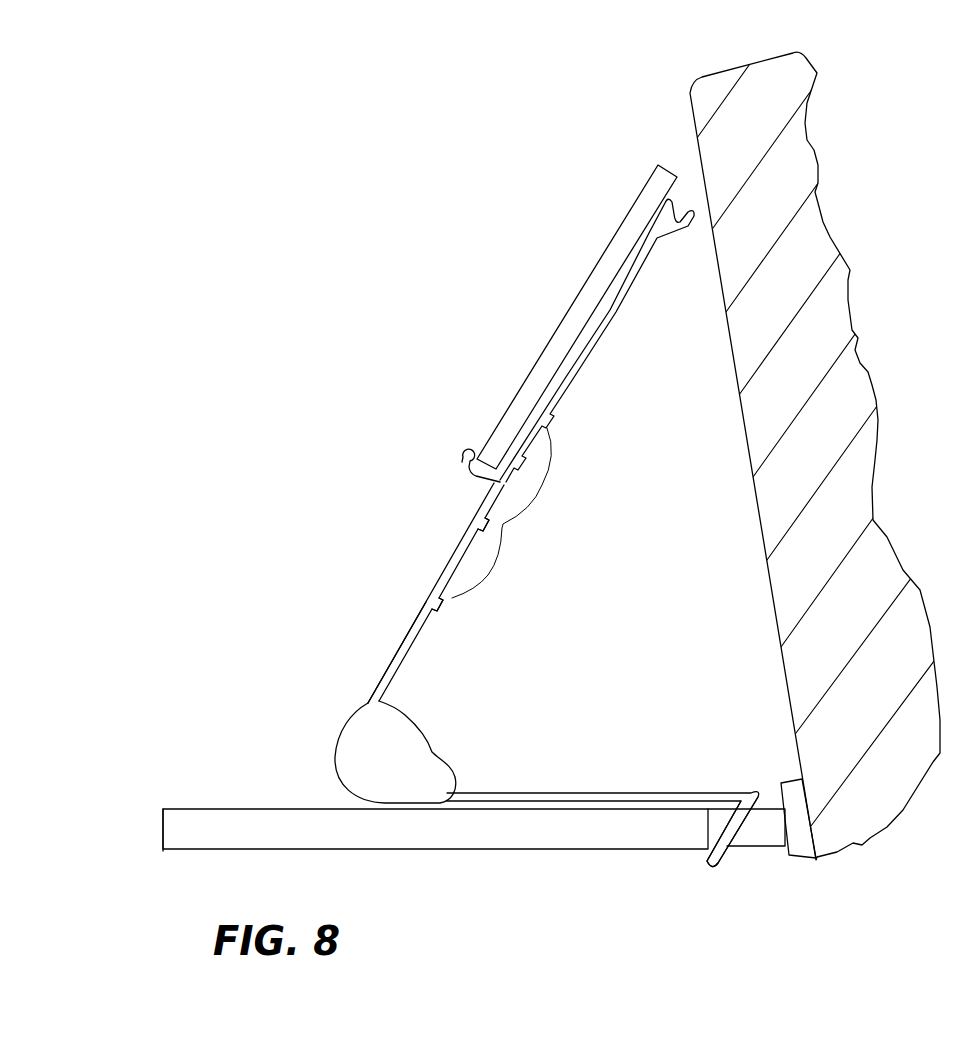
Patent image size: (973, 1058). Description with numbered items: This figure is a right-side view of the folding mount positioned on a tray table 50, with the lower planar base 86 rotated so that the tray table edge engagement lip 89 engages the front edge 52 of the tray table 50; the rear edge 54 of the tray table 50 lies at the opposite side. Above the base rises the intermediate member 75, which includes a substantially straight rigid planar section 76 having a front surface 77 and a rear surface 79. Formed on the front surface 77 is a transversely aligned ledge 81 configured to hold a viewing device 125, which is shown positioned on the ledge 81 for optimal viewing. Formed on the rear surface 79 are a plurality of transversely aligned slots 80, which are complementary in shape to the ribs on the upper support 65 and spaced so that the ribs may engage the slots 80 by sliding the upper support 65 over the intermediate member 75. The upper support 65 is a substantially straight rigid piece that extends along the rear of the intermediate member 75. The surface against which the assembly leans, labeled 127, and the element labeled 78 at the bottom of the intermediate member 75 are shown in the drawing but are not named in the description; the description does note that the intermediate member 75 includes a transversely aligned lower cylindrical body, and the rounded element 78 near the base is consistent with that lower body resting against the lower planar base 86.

The wall 127 is at (812, 92).
The viewing device 125 is at (628, 212).
The upper support 65 is at (600, 347).
The ledge 81 is at (462, 463).
The front surface 77 is at (473, 523).
The slots 80 is at (516, 531).
The planar section 76 is at (414, 607).
The rear surface 79 is at (424, 622).
The intermediate member 75 is at (383, 662).
The bulb foot 78 is at (404, 712).
The lower planar base 86 is at (525, 793).
The tray table edge engagement lip 89 is at (730, 847).
The rear edge 54 is at (160, 824).
The tray table 50 is at (545, 846).
The front edge 52 is at (707, 834).